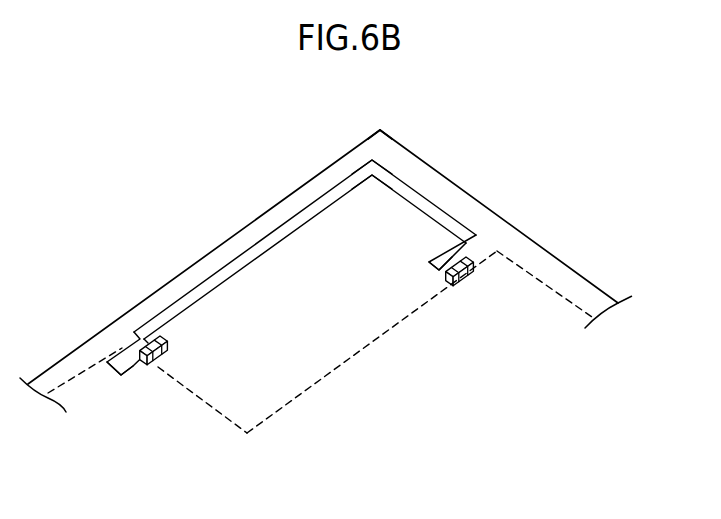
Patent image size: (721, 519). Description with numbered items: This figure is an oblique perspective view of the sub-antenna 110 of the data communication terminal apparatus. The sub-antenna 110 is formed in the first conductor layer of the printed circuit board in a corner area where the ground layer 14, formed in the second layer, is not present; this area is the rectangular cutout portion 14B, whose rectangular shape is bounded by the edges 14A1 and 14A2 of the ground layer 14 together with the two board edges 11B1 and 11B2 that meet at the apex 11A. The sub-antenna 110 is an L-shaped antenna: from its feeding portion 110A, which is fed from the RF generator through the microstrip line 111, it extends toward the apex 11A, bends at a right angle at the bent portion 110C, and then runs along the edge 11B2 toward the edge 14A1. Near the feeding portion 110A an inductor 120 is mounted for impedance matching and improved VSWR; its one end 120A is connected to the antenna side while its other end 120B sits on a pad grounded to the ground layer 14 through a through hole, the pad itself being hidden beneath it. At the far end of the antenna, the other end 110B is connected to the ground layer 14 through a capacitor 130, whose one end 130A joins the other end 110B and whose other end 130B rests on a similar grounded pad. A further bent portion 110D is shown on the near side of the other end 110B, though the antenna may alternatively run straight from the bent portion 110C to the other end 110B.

The apex 11A is at (382, 128).
The edge 11B1 is at (345, 155).
The edge 11B2 is at (463, 187).
The sub-antenna 110 is at (263, 248).
The feeding portion 110A is at (134, 331).
The other end 110B is at (466, 226).
The bent portion 110C is at (392, 177).
The bent portion 110D is at (458, 246).
The microstrip line 111 is at (121, 376).
The inductor 120 is at (189, 401).
The one end 120A is at (166, 351).
The other end 120B is at (160, 366).
The capacitor 130 is at (479, 274).
The one end 130A is at (446, 271).
The other end 130B is at (472, 285).
The ground layer 14 is at (548, 313).
The edge 14A1 is at (331, 372).
The edge 14A2 is at (217, 416).
The rectangular cutout portion 14B is at (297, 395).